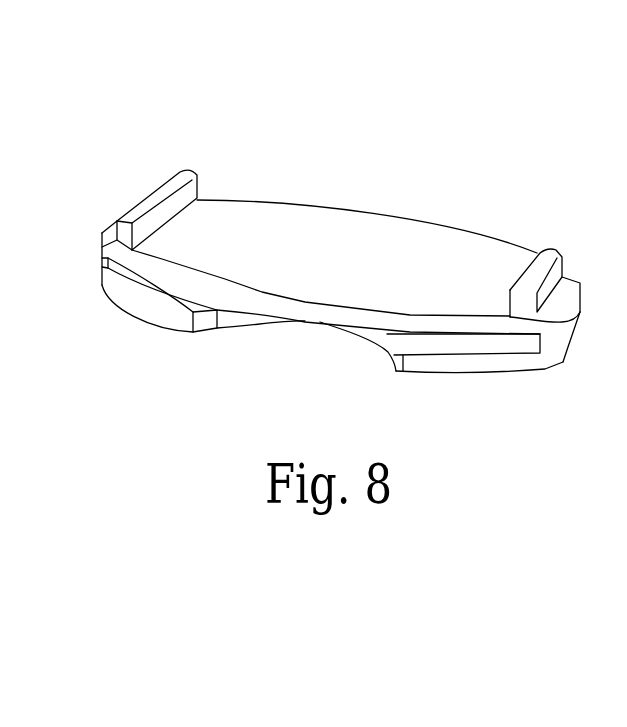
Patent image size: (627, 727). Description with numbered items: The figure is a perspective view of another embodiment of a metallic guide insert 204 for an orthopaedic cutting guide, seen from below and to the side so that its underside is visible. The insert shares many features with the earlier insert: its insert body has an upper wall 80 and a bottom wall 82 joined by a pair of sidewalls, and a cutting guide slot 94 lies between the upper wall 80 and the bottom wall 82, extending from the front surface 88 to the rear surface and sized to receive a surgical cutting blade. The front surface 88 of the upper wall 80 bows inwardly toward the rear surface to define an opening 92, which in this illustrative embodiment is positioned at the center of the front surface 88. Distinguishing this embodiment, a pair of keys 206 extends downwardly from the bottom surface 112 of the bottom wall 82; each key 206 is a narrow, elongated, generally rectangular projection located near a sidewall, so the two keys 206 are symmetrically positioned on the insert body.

The metallic guide insert 204 is at (487, 138).
The keys 206 is at (167, 187).
The bottom surface 112 is at (256, 217).
The upper wall 80 is at (156, 311).
The opening 92 is at (310, 331).
The cutting guide slot 94 is at (438, 343).
The front surface 88 is at (462, 364).
The bottom wall 82 is at (487, 340).